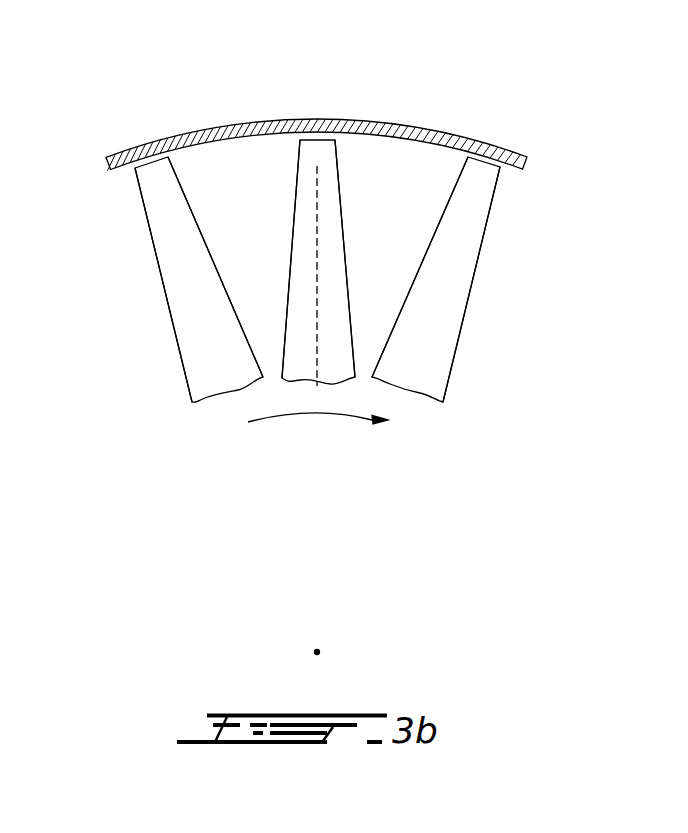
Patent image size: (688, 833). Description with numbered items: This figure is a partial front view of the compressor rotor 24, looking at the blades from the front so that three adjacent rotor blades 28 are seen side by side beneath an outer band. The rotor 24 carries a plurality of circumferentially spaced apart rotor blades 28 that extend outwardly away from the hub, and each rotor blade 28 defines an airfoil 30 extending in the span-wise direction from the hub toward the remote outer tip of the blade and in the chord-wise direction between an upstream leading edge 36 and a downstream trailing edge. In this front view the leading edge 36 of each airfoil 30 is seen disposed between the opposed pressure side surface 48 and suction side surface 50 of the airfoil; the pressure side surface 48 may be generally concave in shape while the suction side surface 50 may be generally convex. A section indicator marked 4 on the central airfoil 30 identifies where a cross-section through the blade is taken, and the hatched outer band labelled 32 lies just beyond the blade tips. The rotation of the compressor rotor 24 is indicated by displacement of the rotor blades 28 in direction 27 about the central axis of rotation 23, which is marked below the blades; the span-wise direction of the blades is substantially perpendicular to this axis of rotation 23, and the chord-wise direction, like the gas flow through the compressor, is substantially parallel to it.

The axis of rotation 23 is at (317, 650).
The rotor 24 is at (380, 160).
The direction of rotation 27 is at (292, 417).
The rotor blade 28 is at (151, 162).
The airfoil 30 is at (163, 203).
The shroud band 32 is at (440, 132).
The leading edge 36 is at (316, 228).
The section line 4- 4 is at (365, 233).
The pressure side surface 48 is at (233, 308).
The suction side surface 50 is at (167, 298).